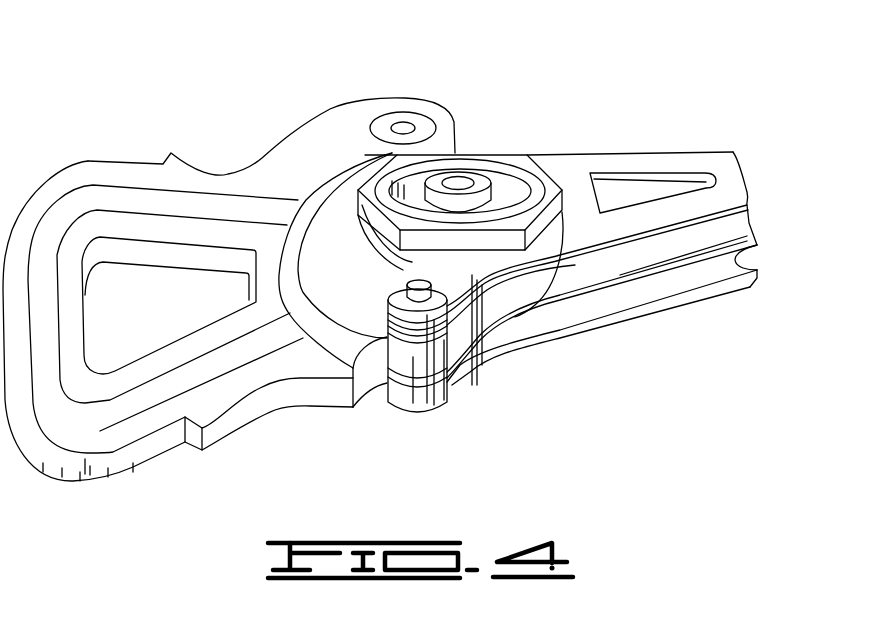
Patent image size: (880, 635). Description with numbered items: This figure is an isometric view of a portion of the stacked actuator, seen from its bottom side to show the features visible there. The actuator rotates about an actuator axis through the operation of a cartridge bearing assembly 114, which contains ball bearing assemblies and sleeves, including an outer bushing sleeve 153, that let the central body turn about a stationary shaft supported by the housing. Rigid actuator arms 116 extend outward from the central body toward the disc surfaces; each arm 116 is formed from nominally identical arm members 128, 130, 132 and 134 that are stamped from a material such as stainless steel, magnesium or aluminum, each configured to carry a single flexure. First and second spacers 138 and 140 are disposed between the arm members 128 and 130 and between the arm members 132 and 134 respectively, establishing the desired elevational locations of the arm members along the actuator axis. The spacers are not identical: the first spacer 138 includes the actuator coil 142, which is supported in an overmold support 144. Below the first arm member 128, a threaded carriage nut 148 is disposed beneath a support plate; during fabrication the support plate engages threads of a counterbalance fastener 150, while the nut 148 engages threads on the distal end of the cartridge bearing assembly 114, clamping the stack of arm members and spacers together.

The cartridge bearing assembly 114 is at (467, 172).
The actuator arm 116 is at (692, 72).
The first arm member 128 is at (762, 272).
The second arm member 130 is at (757, 247).
The third arm member 132 is at (754, 240).
The fourth arm member 134 is at (706, 162).
The first spacer 138 is at (497, 310).
The second spacer 140 is at (470, 362).
The actuator coil 142 is at (178, 205).
The overmold support 144 is at (87, 168).
The threaded carriage nut 148 is at (515, 165).
The counterbalance fastener 150 is at (410, 282).
The outer bushing sleeve 153 is at (537, 190).